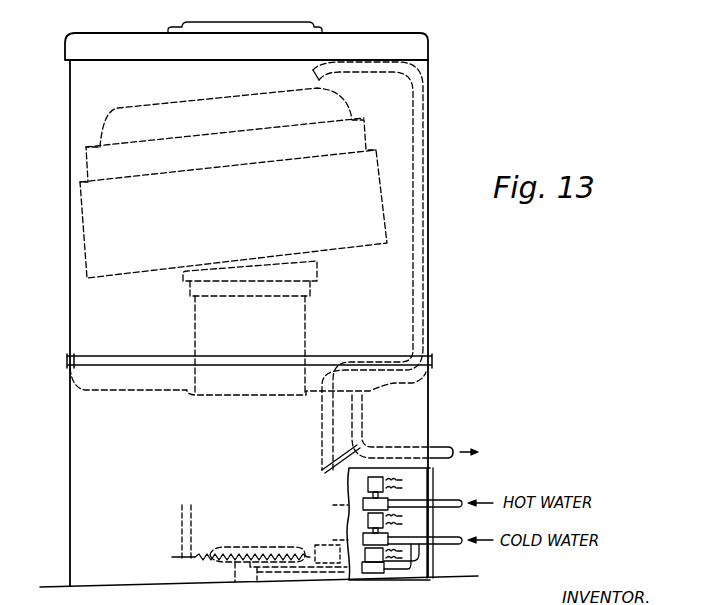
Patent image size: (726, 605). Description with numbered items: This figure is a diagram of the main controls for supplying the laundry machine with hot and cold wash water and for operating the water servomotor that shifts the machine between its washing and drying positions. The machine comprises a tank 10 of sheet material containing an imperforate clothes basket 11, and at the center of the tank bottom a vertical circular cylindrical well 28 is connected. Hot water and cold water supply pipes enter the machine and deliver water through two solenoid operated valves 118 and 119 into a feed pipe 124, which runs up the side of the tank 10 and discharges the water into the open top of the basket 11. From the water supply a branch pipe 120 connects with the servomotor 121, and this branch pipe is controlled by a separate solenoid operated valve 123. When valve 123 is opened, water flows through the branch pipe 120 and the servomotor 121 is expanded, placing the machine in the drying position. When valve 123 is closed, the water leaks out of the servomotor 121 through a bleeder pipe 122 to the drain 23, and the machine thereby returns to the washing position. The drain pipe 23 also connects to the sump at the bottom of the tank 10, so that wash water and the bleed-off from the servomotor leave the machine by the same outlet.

The tank 10 is at (70, 307).
The clothes basket 11 is at (82, 221).
The well 28 is at (305, 325).
The feed pipe 124 is at (422, 273).
The drain pipe 23 is at (440, 447).
The bleeder pipe 122 is at (322, 468).
The solenoid operated valve 118 is at (365, 502).
The solenoid operated valve 119 is at (365, 536).
The solenoid operated valve 123 is at (382, 574).
The branch pipe 120 is at (268, 574).
The servomotor 121 is at (238, 562).